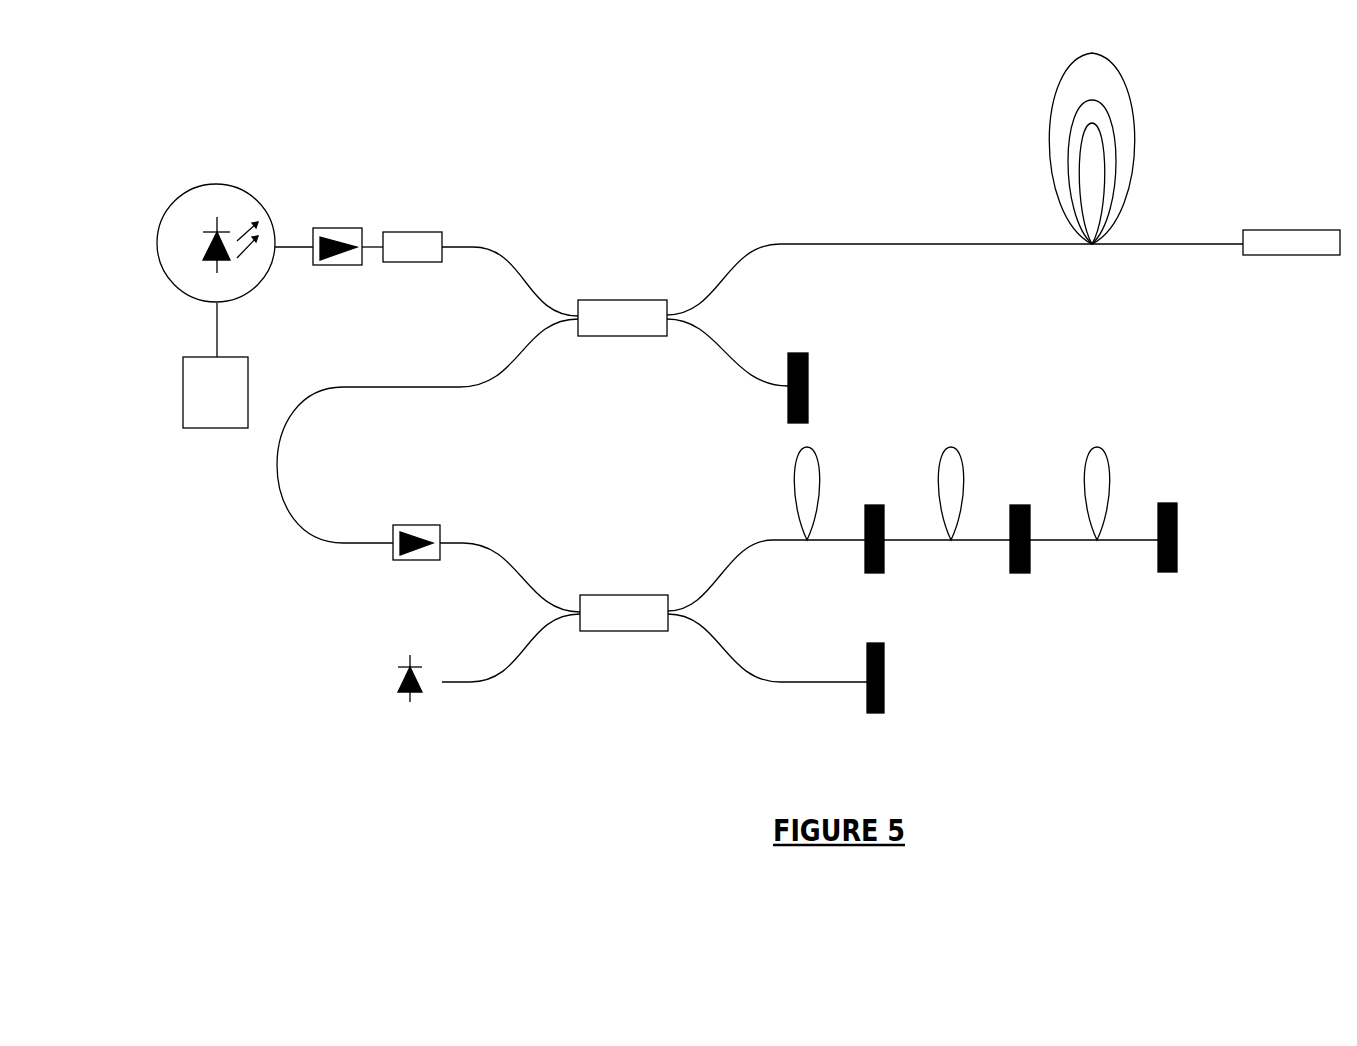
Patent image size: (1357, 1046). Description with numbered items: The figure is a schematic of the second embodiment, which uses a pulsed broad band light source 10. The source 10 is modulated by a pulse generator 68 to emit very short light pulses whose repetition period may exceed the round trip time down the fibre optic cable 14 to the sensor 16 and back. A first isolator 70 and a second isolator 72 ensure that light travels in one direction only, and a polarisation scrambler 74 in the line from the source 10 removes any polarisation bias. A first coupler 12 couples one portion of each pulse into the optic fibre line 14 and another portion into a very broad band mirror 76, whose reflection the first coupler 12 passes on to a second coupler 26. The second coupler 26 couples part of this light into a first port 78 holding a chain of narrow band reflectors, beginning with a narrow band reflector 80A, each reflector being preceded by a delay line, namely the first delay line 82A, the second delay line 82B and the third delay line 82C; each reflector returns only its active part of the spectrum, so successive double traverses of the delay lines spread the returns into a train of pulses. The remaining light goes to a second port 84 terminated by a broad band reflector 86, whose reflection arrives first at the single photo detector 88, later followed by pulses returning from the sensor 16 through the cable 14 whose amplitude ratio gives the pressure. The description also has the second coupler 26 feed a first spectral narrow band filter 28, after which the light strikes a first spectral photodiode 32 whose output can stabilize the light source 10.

The light source 10 is at (218, 188).
The first coupler 12 is at (593, 317).
The fibre optic cable 14 is at (1047, 137).
The sensor 16 is at (1282, 255).
The second coupler 26 is at (618, 602).
The first spectral narrow band filter 28 is at (1028, 507).
The first spectral photodiode 32 is at (1173, 505).
The pulse generator 68 is at (220, 392).
The first isolator 70 is at (358, 247).
The second isolator 72 is at (428, 533).
The polarisation scrambler 74 is at (405, 240).
The very broad band mirror 76 is at (808, 370).
The first port 78 is at (752, 560).
The narrow band reflector 80A is at (883, 505).
The first delay line 82A is at (815, 487).
The second delay line 82B is at (963, 488).
The fiber loop 82C is at (1107, 478).
The second port 84 is at (720, 650).
The broad band reflector 86 is at (885, 673).
The photodetector 88 is at (398, 680).